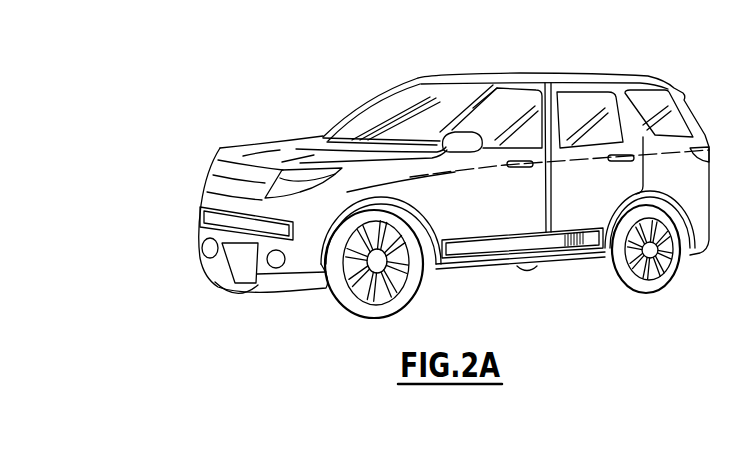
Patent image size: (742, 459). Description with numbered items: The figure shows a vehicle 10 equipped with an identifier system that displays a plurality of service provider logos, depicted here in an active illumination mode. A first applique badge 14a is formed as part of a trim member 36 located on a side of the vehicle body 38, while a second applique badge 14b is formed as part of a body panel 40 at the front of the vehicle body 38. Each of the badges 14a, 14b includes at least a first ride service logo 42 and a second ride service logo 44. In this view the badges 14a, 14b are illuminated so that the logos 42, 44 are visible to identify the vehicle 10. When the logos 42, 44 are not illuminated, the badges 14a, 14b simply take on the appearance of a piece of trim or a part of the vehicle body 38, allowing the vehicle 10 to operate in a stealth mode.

The vehicle 10 is at (433, 178).
The first applique badge 14a is at (548, 250).
The second applique badge 14b is at (197, 222).
The trim member 36 is at (586, 249).
The vehicle body 38 is at (668, 168).
The body panel 40 is at (210, 272).
The first ride service logo 42 is at (200, 212).
The second ride service logo 44 is at (268, 244).